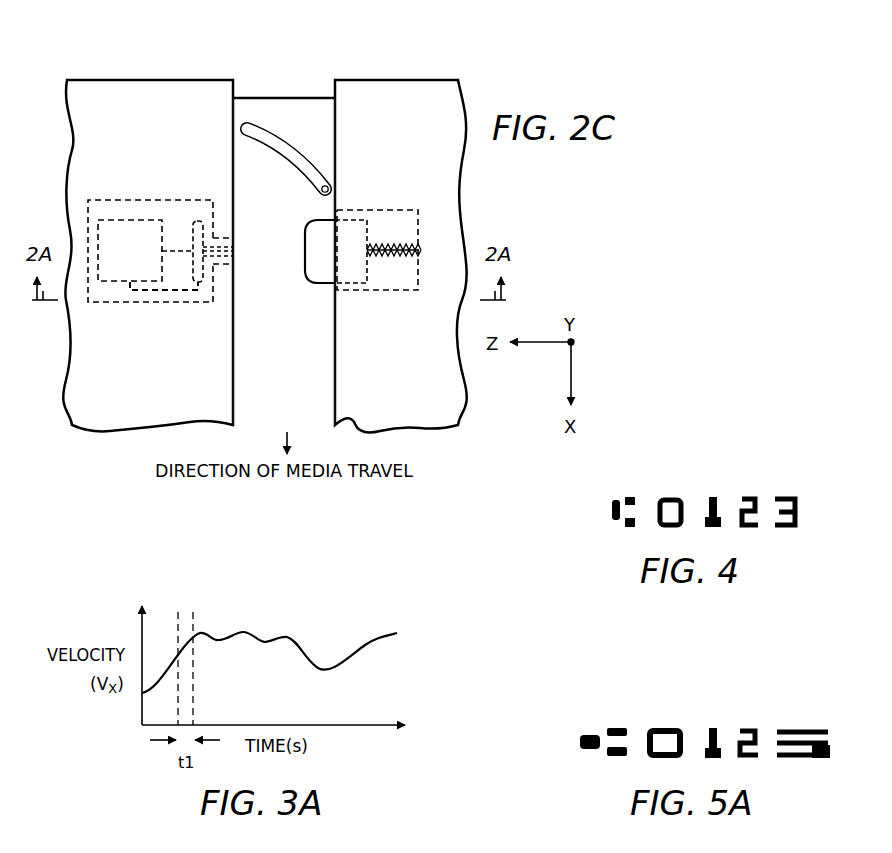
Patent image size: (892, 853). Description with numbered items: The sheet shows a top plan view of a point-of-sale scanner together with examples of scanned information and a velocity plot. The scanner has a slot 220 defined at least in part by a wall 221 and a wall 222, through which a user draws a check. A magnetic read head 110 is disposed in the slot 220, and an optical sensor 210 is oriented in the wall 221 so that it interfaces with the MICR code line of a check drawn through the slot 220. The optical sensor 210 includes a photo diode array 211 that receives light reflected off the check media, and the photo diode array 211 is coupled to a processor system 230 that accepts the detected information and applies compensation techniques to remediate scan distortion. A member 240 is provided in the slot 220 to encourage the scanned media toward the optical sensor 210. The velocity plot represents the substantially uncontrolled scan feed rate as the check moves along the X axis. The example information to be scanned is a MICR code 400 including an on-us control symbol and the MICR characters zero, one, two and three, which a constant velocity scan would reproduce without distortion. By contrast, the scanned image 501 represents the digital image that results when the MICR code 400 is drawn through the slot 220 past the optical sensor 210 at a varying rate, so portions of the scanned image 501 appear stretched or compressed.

In FIG. 2C, the magnetic read head 110 is at (320, 285).
In FIG. 2C, the optical sensor 210 is at (160, 269).
In FIG. 2C, the photo diode array 211 is at (197, 219).
In FIG. 2C, the slot 220 is at (306, 382).
In FIG. 2C, the wall 221 is at (238, 80).
In FIG. 2C, the wall 222 is at (330, 80).
In FIG. 2C, the processor system 230 is at (149, 261).
In FIG. 2C, the member 240 is at (289, 157).
In FIG. 4, the MICR code 400 is at (796, 462).
In FIG. 5A, the scanned image 501 is at (797, 694).